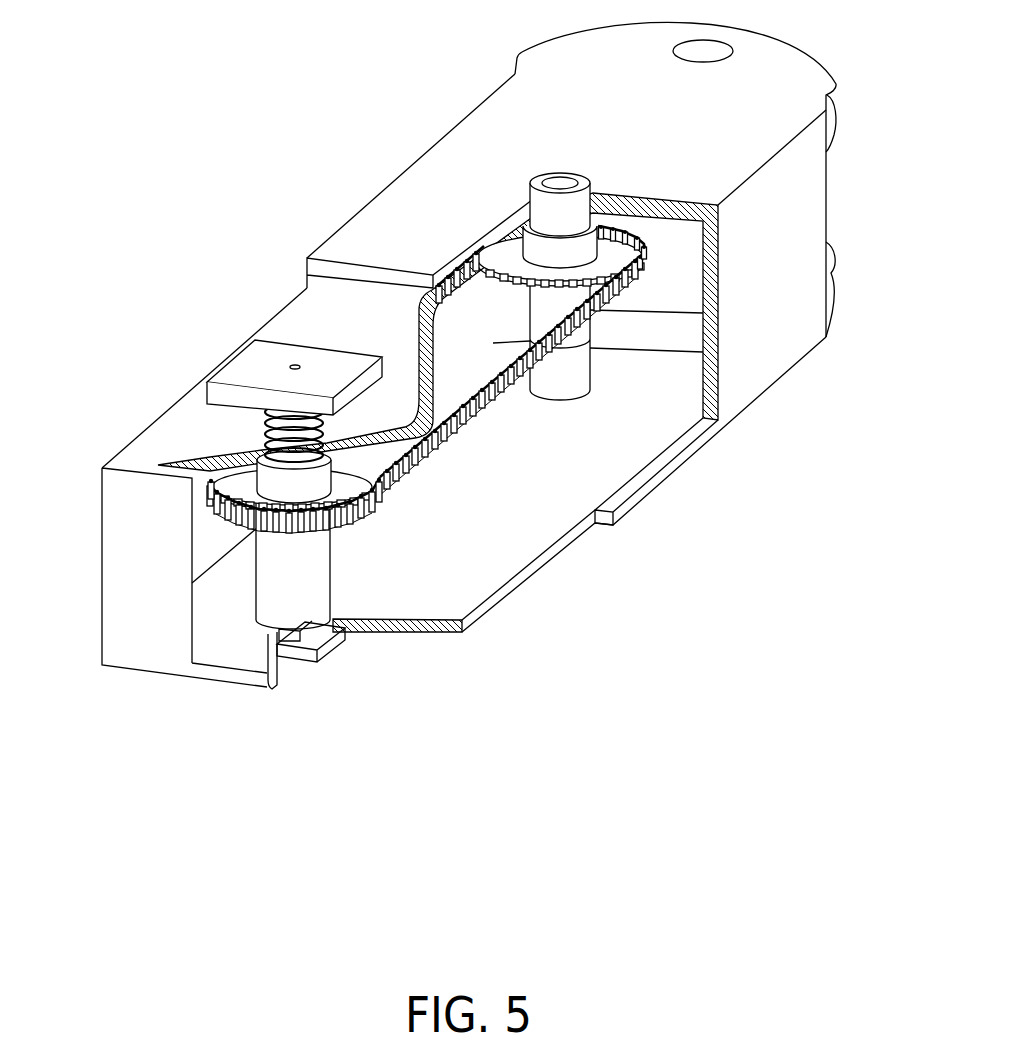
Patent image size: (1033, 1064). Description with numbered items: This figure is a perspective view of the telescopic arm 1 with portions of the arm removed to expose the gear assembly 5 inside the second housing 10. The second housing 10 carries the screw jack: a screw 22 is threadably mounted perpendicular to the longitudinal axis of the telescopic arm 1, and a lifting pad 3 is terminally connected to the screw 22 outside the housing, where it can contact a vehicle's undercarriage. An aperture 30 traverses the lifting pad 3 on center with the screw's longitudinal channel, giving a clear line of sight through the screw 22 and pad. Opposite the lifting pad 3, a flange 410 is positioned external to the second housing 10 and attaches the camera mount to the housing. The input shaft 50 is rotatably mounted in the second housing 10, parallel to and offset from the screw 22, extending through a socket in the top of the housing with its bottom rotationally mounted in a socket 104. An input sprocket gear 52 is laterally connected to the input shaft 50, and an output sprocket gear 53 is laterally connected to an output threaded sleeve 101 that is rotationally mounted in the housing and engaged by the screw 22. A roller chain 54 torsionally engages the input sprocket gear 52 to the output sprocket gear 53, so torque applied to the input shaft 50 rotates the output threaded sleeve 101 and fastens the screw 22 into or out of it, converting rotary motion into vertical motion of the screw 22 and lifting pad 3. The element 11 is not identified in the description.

The telescopic arm 1 is at (435, 355).
The second housing 10 is at (110, 627).
The top cover plate 11 is at (465, 137).
The socket 104 is at (530, 198).
The output threaded sleeve 101 is at (327, 565).
The lifting pad 3 is at (215, 393).
The aperture 30 is at (295, 367).
The screw 22 is at (262, 420).
The gear assembly 5 is at (510, 428).
The input sprocket gear 52 is at (500, 277).
The output sprocket gear 53 is at (380, 496).
The roller chain 54 is at (606, 307).
The input shaft 50 is at (583, 357).
The flange 410 is at (320, 645).